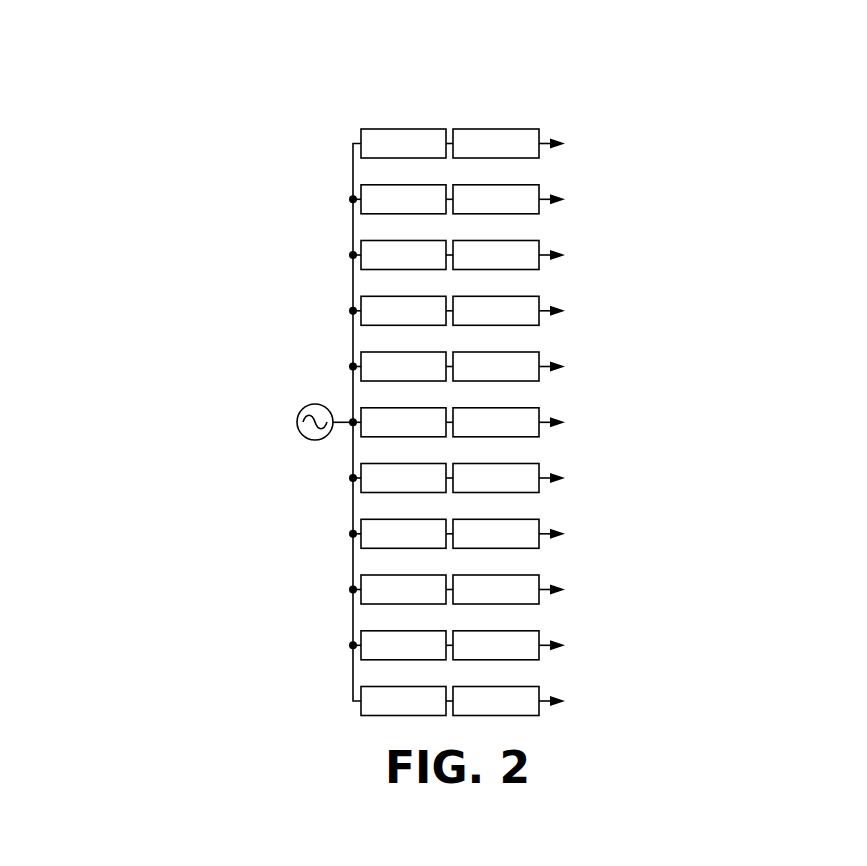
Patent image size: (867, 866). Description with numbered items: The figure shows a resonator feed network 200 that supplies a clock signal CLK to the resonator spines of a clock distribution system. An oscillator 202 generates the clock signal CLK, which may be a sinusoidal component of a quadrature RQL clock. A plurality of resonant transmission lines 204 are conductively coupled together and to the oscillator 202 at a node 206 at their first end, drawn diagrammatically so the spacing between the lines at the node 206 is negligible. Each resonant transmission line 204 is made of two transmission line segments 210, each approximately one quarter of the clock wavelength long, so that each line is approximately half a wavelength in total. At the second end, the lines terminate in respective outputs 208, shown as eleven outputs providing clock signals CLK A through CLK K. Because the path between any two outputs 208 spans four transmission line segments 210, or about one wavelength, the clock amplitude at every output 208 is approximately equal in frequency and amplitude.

The resonator feed network 200 is at (132, 93).
The oscillator 202 is at (299, 416).
The resonant transmission lines 204 is at (452, 82).
The node 206 is at (353, 288).
The outputs 208 is at (652, 232).
The transmission line segments 210 is at (397, 129).